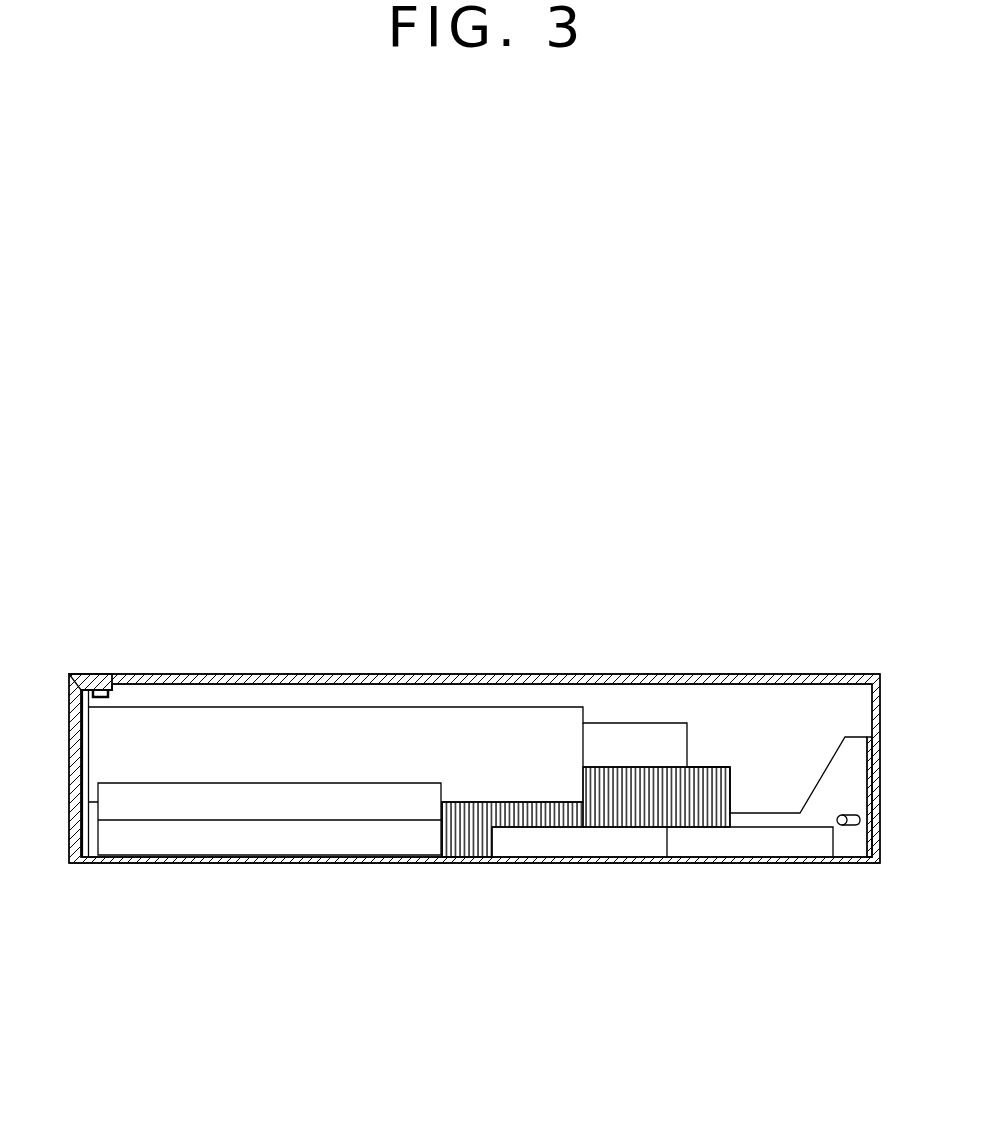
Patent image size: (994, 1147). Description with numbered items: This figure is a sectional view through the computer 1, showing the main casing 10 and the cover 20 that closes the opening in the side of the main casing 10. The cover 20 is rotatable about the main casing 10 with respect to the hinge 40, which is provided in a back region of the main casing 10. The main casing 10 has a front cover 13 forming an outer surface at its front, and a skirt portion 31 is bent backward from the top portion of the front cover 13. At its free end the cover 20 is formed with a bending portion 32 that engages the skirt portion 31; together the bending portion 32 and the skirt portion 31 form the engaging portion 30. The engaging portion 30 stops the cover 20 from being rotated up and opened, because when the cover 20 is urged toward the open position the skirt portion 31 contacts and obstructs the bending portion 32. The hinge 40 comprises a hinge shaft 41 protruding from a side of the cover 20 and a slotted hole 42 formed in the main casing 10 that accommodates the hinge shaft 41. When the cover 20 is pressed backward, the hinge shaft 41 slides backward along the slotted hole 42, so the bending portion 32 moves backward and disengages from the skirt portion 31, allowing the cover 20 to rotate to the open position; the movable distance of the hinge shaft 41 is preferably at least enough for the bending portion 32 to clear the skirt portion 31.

The computer 1 is at (824, 628).
The main casing 10 is at (148, 863).
The front cover 13 is at (78, 863).
The cover 20 is at (643, 675).
The engaging portion 30 is at (75, 590).
The skirt portion 31 is at (92, 673).
The bending portion 32 is at (108, 699).
The hinge 40 is at (788, 952).
The hinge shaft 41 is at (822, 863).
The slotted hole 42 is at (858, 862).